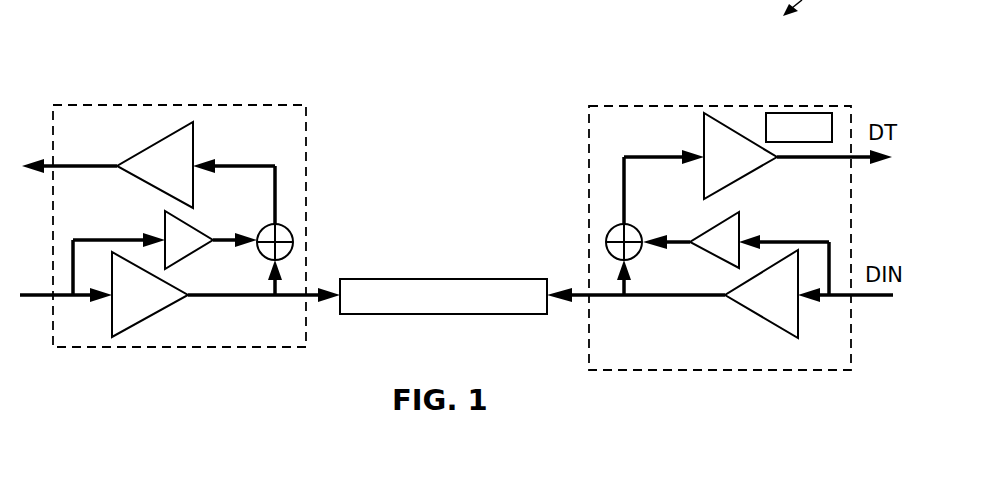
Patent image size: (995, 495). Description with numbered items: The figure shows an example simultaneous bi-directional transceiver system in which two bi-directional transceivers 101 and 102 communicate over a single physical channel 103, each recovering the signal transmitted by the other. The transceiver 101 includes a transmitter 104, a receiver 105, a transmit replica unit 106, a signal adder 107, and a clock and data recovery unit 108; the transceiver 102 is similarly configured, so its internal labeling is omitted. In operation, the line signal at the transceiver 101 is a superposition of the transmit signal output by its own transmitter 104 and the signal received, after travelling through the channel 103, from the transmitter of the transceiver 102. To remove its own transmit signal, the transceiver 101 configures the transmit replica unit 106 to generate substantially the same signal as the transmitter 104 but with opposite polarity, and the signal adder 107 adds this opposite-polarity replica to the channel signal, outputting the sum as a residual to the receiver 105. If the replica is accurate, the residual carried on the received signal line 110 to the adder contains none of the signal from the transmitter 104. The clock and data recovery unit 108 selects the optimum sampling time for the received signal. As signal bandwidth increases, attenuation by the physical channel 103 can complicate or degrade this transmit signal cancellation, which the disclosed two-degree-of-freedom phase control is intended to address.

The bi-directional transceiver 101 is at (652, 106).
The bi-directional transceiver 102 is at (253, 105).
The physical channel 103 is at (459, 278).
The transmitter 104 is at (773, 322).
The receiver 105 is at (720, 122).
The transmit replica unit 106 is at (738, 223).
The signal adder 107 is at (612, 227).
The clock and data recovery (CDR) unit 108 is at (800, 113).
The received signal line 110 is at (608, 295).